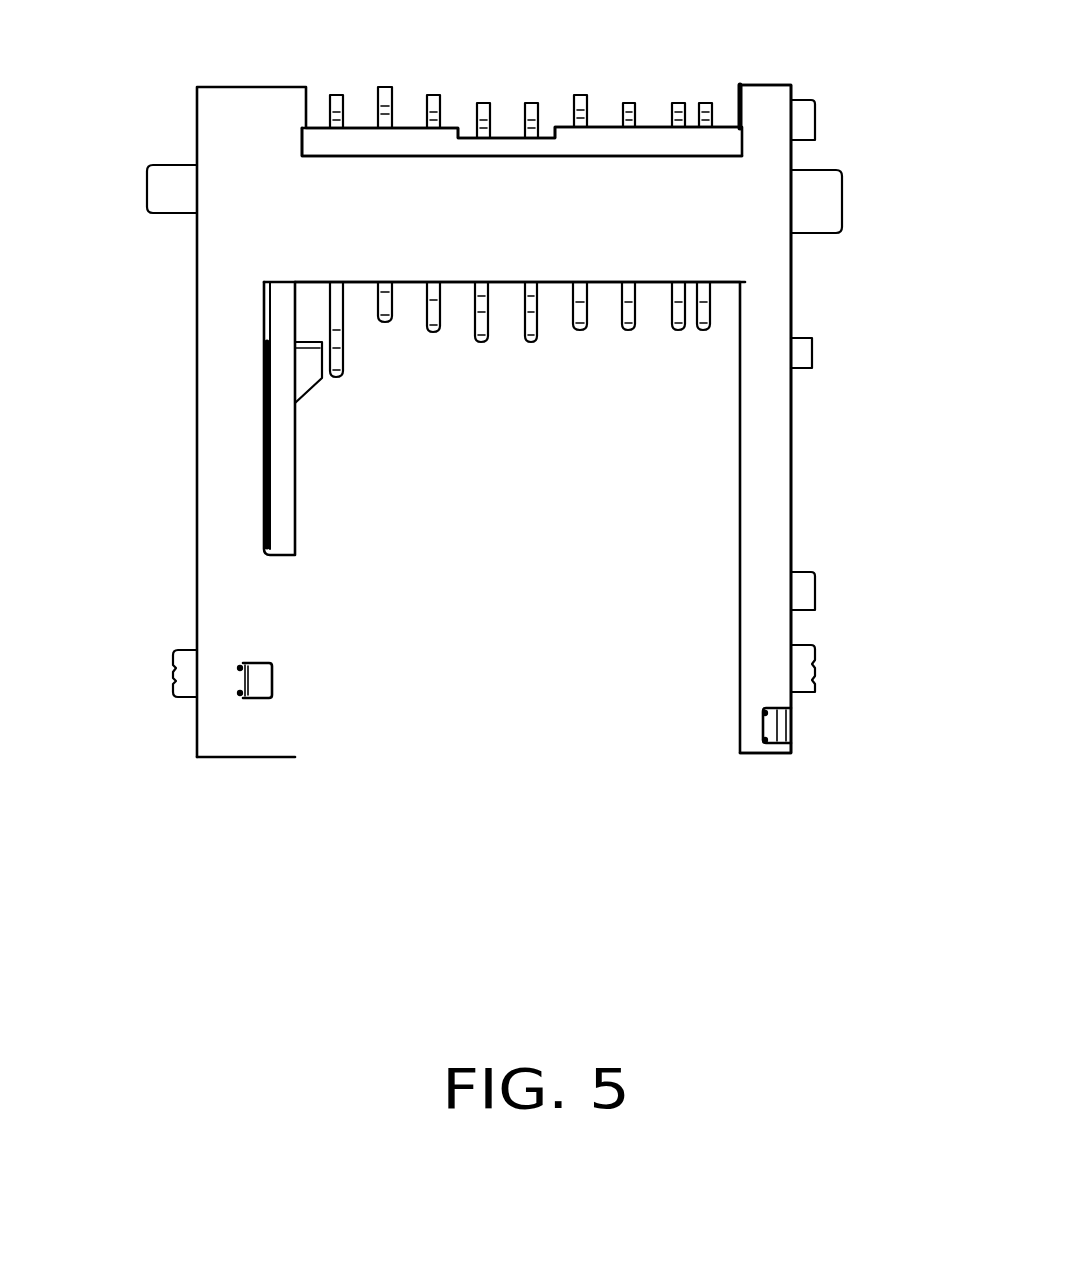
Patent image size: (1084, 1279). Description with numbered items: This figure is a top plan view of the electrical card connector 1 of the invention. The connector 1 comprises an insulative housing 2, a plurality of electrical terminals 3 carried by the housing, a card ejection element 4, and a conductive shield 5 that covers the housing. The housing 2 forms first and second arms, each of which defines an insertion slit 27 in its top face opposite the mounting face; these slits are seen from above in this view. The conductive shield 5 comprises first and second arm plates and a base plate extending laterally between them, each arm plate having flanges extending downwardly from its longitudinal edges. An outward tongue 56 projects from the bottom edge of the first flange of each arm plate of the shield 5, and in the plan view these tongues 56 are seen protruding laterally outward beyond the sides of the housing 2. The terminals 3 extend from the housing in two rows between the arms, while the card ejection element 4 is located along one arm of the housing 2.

The electrical card connector 1 is at (160, 150).
The insulative housing 2 is at (703, 142).
The electrical terminals 3 is at (577, 95).
The card ejection element 4 is at (308, 367).
The conductive shield 5 is at (762, 213).
The outward tongue 56 is at (823, 212).
The insertion slit 27 is at (240, 668).